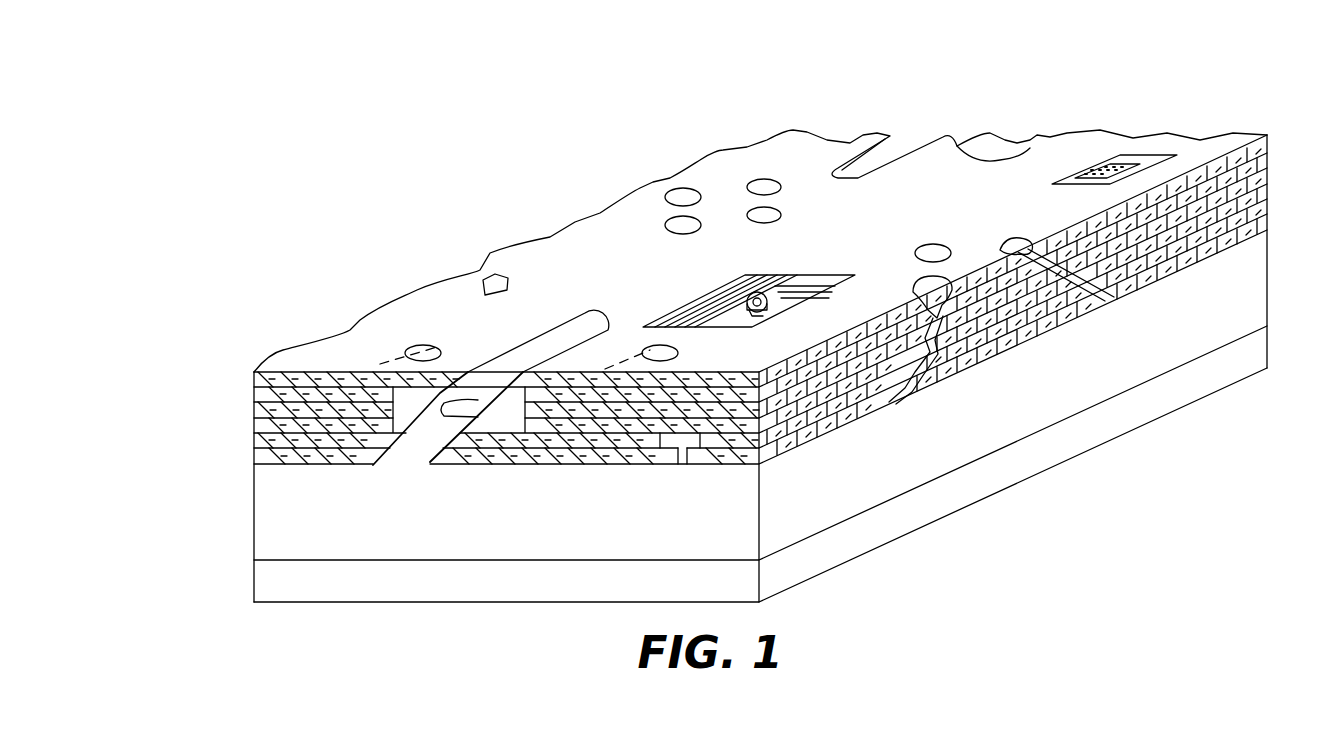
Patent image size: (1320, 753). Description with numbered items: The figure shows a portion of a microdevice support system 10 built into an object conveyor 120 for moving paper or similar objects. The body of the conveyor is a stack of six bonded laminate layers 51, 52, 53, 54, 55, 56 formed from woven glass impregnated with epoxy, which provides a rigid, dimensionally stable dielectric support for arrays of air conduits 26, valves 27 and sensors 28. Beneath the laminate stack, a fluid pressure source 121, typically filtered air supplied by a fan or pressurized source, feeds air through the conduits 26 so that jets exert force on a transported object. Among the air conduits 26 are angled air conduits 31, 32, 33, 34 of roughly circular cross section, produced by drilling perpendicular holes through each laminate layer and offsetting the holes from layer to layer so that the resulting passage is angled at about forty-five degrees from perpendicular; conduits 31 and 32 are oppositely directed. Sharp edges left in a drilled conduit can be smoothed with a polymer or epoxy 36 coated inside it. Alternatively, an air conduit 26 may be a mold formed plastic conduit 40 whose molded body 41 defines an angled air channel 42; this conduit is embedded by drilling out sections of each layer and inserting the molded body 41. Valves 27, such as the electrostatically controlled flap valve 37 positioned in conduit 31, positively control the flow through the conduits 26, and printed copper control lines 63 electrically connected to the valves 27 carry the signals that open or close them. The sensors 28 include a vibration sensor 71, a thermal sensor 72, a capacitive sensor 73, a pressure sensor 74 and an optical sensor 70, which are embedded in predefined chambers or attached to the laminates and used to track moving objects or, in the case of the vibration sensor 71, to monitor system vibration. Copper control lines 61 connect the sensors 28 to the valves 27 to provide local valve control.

The microdevice support system 10 is at (558, 72).
The air conduits 26 is at (723, 192).
The valves 27 is at (440, 420).
The sensors 28 is at (508, 263).
The angled air conduit 31 is at (412, 352).
The angled air conduit 32 is at (764, 179).
The angled air conduit 33 is at (683, 188).
The angled air conduit 34 is at (773, 211).
The polymer or epoxy 36 is at (907, 405).
The electrostatically controlled flap valve 37 is at (962, 336).
The mold formed plastic conduit 40 is at (583, 326).
The molded body 41 is at (407, 407).
The angled air channel 42 is at (440, 425).
The laminate layer 51 is at (253, 373).
The laminate layer 52 is at (253, 395).
The laminate layer 53 is at (253, 413).
The laminate layer 54 is at (253, 430).
The laminate layer 55 is at (253, 443).
The laminate layer 56 is at (253, 460).
The copper control lines 61 is at (752, 312).
The printed copper control lines 63 is at (707, 312).
The optical sensor 70 is at (763, 297).
The vibration sensor 71 is at (1178, 207).
The thermal sensor 72 is at (1120, 166).
The capacitive sensor 73 is at (490, 279).
The pressure sensor 74 is at (688, 440).
The object conveyor 120 is at (1157, 128).
The fluid pressure source 121 is at (578, 532).